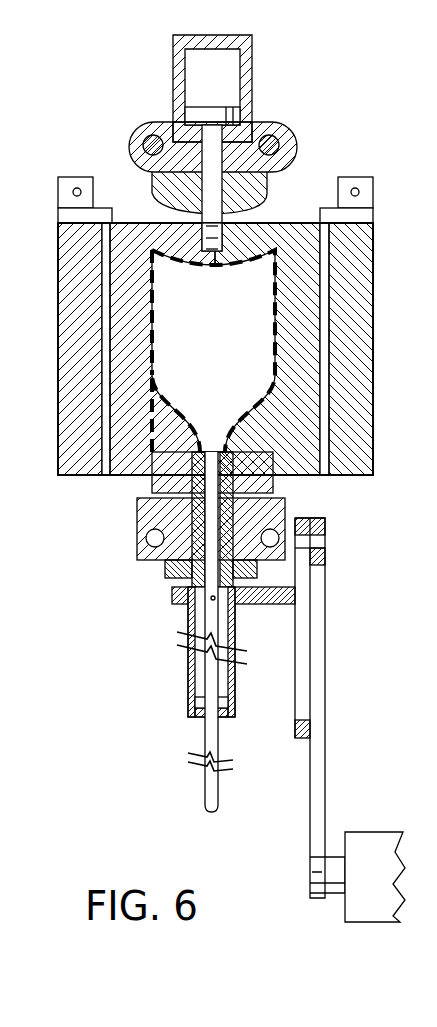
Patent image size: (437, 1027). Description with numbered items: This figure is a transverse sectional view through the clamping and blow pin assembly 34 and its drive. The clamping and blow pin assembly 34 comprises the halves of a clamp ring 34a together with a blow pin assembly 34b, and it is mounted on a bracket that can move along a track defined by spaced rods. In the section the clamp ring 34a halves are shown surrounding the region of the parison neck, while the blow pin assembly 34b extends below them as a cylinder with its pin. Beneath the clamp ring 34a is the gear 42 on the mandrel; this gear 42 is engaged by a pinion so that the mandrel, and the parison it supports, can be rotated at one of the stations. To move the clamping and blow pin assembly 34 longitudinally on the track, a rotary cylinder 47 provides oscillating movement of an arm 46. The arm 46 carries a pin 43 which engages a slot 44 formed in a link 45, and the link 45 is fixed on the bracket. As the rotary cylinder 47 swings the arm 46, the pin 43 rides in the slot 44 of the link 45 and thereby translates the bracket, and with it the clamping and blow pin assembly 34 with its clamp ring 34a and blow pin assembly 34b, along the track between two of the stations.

The clamping and blow pin assembly 34 is at (184, 657).
The clamp ring 34a is at (150, 483).
The blow pin assembly 34b is at (188, 612).
The gear 42 is at (165, 566).
The pin 43 is at (320, 543).
The slot 44 is at (325, 682).
The link 45 is at (295, 732).
The arm 46 is at (318, 797).
The rotary cylinder 47 is at (375, 845).